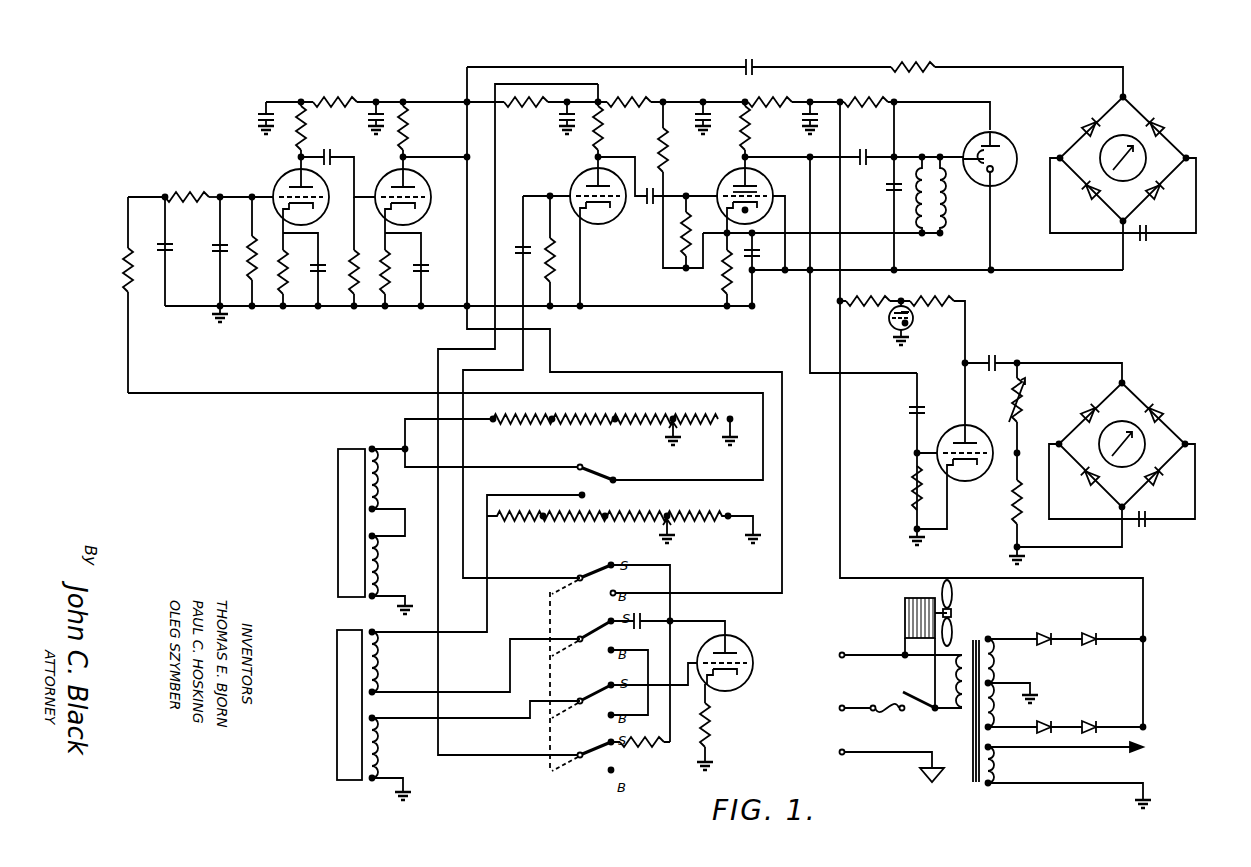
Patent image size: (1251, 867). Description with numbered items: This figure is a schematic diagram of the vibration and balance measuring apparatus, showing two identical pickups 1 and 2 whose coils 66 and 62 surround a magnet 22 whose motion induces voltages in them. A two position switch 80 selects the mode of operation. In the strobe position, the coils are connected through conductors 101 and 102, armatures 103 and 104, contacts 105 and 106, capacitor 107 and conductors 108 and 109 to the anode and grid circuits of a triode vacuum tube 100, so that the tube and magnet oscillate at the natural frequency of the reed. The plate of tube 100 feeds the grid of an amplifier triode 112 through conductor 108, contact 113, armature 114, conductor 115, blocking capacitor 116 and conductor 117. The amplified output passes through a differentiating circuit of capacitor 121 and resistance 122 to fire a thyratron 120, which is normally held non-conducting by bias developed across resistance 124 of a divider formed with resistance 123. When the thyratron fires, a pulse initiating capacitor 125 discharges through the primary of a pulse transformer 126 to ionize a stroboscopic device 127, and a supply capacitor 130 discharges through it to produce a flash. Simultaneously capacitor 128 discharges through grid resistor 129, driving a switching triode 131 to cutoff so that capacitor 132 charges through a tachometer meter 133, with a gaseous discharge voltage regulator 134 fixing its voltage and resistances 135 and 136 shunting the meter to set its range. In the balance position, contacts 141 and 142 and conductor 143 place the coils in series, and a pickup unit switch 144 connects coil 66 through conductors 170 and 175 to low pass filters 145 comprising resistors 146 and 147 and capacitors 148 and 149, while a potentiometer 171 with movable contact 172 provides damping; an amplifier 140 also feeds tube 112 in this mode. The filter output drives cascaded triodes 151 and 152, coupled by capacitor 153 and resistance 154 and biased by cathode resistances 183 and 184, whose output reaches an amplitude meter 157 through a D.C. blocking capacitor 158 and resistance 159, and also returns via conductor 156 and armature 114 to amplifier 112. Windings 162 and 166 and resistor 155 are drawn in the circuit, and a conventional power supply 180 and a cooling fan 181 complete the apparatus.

The pickup 1 is at (351, 715).
The pickup 2 is at (354, 525).
The magnet 22 is at (345, 735).
The pickup coil 62 is at (384, 736).
The pickup coil 66 is at (381, 655).
The two position switch 80 is at (588, 781).
The triode vacuum tube 100 is at (750, 648).
The conductor 101 is at (489, 692).
The conductor 102 is at (505, 719).
The switch armature 103 is at (596, 630).
The switch armature 104 is at (596, 693).
The contact 105 is at (606, 615).
The contact 106 is at (613, 680).
The capacitor 107 is at (653, 620).
The conductor 108 is at (712, 621).
The conductor 109 is at (672, 690).
The triode 112 is at (583, 173).
The contact 113 is at (613, 557).
The armature 114 is at (596, 570).
The conductor 115 is at (503, 578).
The blocking capacitor 116 is at (523, 262).
The conductor 117 is at (542, 195).
The thyratron 120 is at (728, 172).
The capacitor 121 is at (648, 208).
The resistance 122 is at (680, 250).
The resistance 123 is at (660, 150).
The resistance 124 is at (722, 272).
The pulse initiating capacitor 125 is at (865, 151).
The pulse transformer 126 is at (931, 146).
The stroboscopic device 127 is at (1006, 140).
The capacitor 128 is at (912, 409).
The grid resistor 129 is at (911, 490).
The supply capacitor 130 is at (890, 192).
The switching triode 131 is at (968, 432).
The capacitor 132 is at (1004, 358).
The meter 133 is at (1172, 401).
The gaseous discharge voltage regulator 134 is at (913, 323).
The resistance 135 is at (1008, 514).
The resistance 136 is at (1026, 400).
The amplifier 140 is at (360, 100).
The contact 141 is at (605, 650).
The contact 142 is at (596, 740).
The conductor 143 is at (633, 630).
The pickup unit switch 144 is at (606, 466).
The low pass filters 145 is at (164, 188).
The resistor 146 is at (123, 272).
The resistor 147 is at (185, 193).
The capacitor 148 is at (170, 251).
The capacitor 149 is at (215, 246).
The triode 151 is at (276, 174).
The triode 152 is at (418, 178).
The capacitor 153 is at (333, 155).
The resistance 154 is at (352, 290).
The grid resistor 155 is at (556, 262).
The conductor 156 is at (592, 370).
The amplitude meter 157 is at (1176, 121).
The D.C. blocking capacitor 158 is at (760, 72).
The resistance 159 is at (930, 74).
The winding 162 is at (381, 554).
The winding 166 is at (381, 481).
The conductor 170 is at (491, 613).
The potentiometer 171 is at (560, 520).
The contact 172 is at (673, 526).
The conductor 175 is at (250, 392).
The power supply 180 is at (1028, 694).
The fan 181 is at (960, 616).
The bias resistance 183 is at (280, 295).
The bias resistance 184 is at (396, 264).